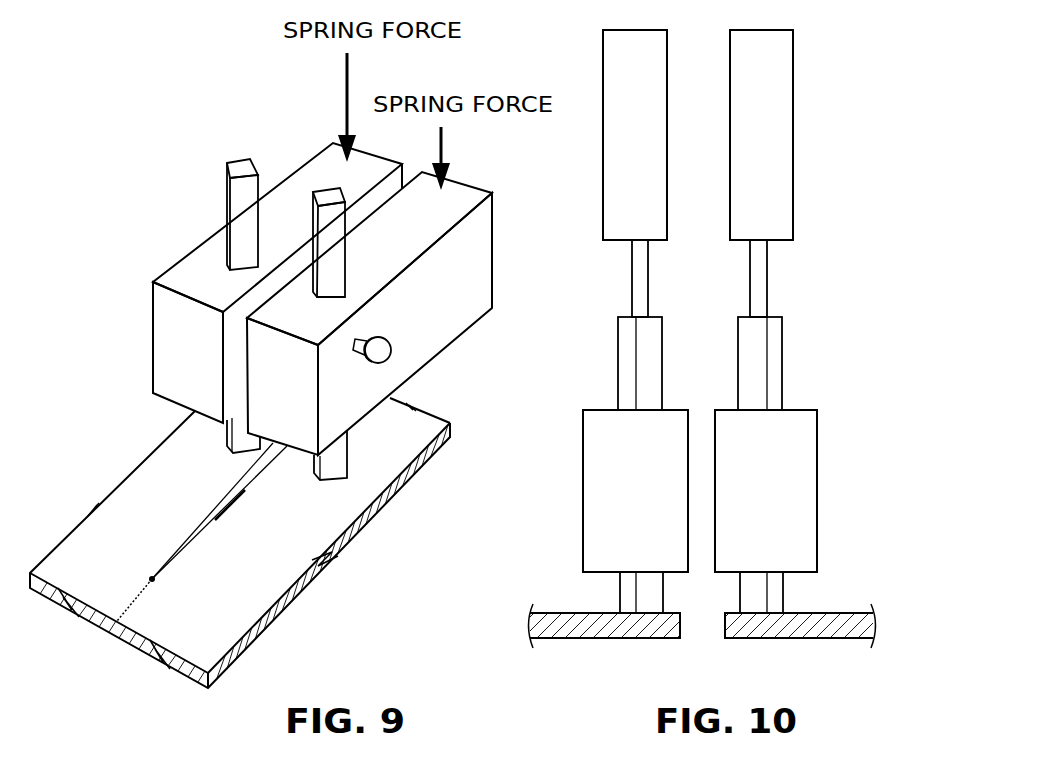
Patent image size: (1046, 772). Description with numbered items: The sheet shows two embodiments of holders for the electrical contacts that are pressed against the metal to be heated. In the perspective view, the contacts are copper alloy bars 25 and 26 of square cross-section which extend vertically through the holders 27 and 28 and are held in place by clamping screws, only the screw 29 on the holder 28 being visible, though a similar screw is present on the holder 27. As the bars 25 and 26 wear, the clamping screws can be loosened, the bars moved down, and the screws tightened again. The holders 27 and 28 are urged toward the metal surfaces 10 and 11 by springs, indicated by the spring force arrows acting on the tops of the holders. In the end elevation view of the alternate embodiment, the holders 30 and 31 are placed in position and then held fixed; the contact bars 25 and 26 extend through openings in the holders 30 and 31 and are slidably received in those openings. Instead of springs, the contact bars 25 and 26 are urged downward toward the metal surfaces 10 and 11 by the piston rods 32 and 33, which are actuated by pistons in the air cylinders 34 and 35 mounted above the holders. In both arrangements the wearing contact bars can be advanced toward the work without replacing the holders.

In FIG. 9, the metal surface 10 is at (128, 538).
In FIG. 10, the metal surface 10 is at (578, 630).
In FIG. 9, the metal surface 11 is at (258, 579).
In FIG. 10, the metal surface 11 is at (857, 630).
In FIG. 9, the copper alloy bar 25 is at (227, 188).
In FIG. 10, the copper alloy bar 25 is at (653, 358).
In FIG. 9, the copper alloy bar 26 is at (347, 257).
In FIG. 10, the copper alloy bar 26 is at (775, 353).
In FIG. 9, the holder 27 is at (163, 339).
In FIG. 9, the holder 28 is at (480, 280).
In FIG. 9, the clamping screw 29 is at (391, 347).
In FIG. 10, the holder 30 is at (590, 540).
In FIG. 10, the holder 31 is at (808, 537).
In FIG. 10, the piston rod 32 is at (642, 283).
In FIG. 10, the piston rod 33 is at (760, 278).
In FIG. 10, the air cylinder 34 is at (608, 165).
In FIG. 10, the air cylinder 35 is at (785, 170).